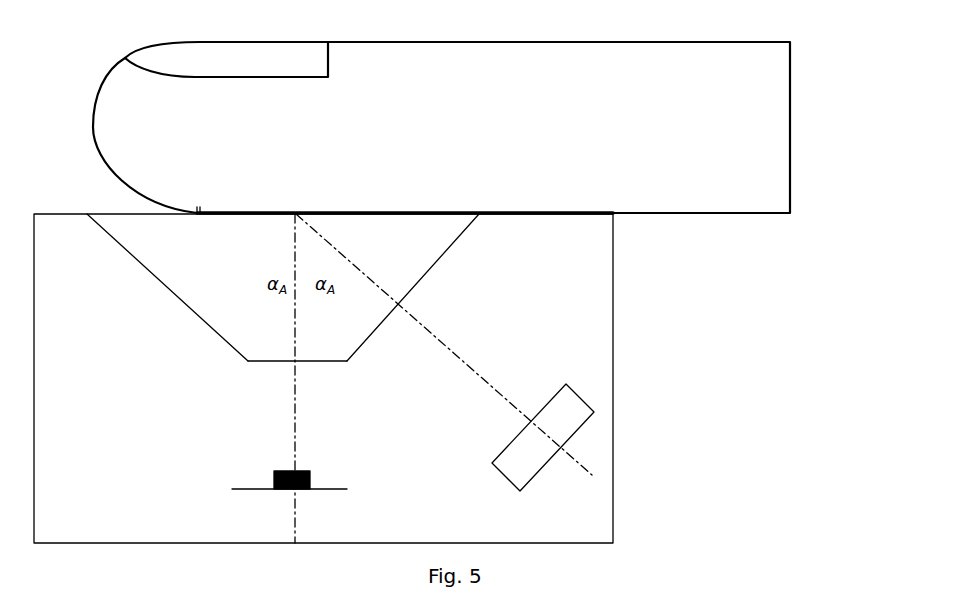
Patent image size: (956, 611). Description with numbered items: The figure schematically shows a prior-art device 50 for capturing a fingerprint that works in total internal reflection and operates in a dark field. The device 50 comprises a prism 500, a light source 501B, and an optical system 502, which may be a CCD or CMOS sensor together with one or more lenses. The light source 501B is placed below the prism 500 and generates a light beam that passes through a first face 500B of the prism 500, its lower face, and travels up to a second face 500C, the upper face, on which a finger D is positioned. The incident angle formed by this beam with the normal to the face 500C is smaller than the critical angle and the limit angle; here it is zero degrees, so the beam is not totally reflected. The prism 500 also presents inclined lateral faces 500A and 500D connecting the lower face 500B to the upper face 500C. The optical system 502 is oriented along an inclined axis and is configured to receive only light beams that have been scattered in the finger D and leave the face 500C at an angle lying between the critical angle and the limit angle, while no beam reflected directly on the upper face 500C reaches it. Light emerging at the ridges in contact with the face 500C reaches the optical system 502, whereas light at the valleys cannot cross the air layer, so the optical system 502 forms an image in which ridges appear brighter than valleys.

The finger D is at (790, 78).
The device 50 is at (613, 342).
The prism 500 is at (349, 289).
The first inclined surface of prism 500A is at (148, 270).
The first face of the prism 500B is at (320, 363).
The second face of the prism 500C is at (360, 212).
The second inclined surface of prism 500D is at (432, 266).
The light source 501B is at (322, 487).
The optical system 502 is at (495, 467).